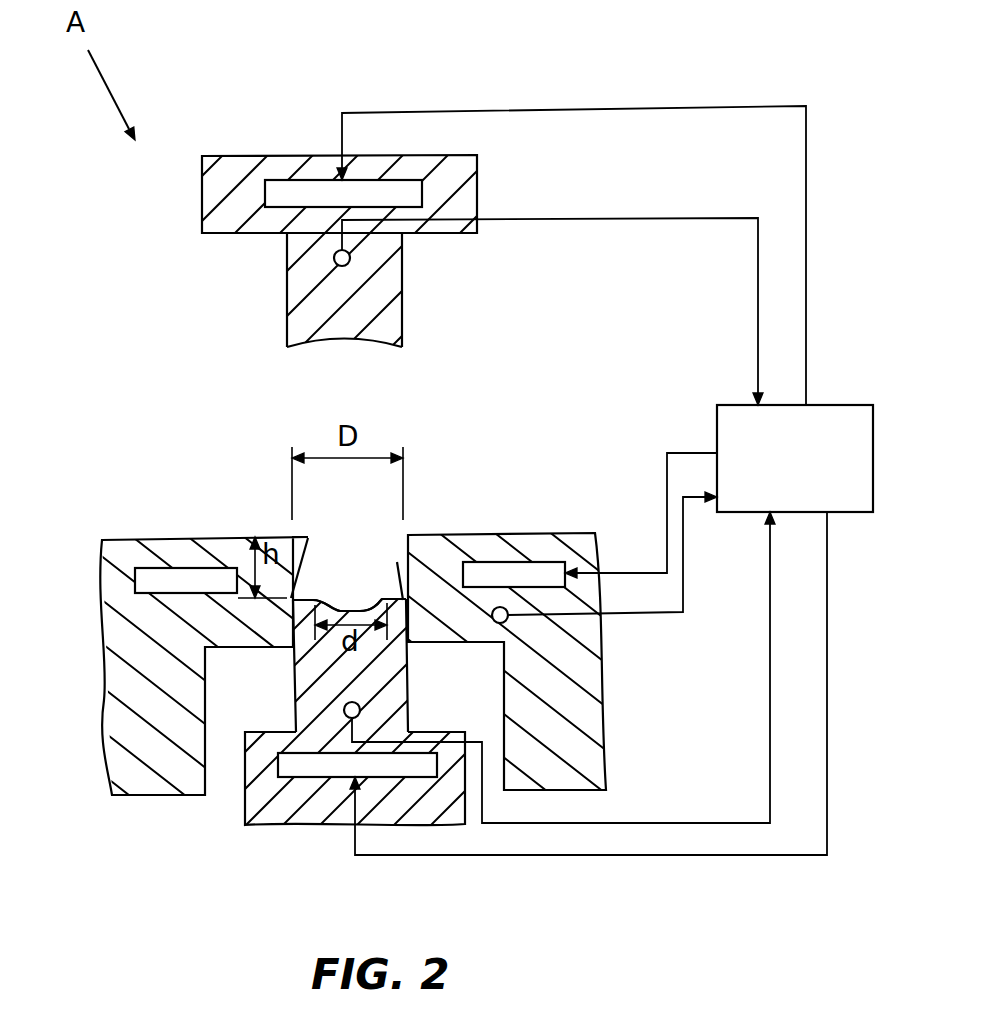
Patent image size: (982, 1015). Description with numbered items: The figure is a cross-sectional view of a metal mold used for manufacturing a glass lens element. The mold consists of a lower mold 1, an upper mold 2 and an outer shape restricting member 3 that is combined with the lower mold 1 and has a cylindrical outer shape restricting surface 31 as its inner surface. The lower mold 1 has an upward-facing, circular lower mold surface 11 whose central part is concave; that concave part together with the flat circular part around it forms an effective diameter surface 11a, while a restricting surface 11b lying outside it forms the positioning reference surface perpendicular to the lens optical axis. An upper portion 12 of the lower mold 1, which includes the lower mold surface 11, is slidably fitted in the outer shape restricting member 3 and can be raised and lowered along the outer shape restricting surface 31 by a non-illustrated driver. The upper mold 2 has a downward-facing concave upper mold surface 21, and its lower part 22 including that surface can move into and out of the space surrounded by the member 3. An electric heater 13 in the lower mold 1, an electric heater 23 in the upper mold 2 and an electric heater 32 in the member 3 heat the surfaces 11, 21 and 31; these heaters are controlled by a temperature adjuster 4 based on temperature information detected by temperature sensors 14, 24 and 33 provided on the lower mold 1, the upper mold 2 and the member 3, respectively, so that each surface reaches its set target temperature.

The lower mold 1 is at (497, 689).
The upper mold 2 is at (455, 252).
The outer shape restricting member 3 is at (364, 624).
The temperature adjuster 4 is at (813, 485).
The lower mold surface 11 is at (387, 540).
The effective diameter surface 11a is at (345, 610).
The restricting surface 11b is at (397, 562).
The upper portion 12 is at (358, 601).
The electric heater 13 is at (297, 772).
The temperature sensor 14 is at (360, 705).
The upper mold surface 21 is at (342, 345).
The lower part 22 is at (312, 314).
The electric heater 23 is at (287, 193).
The temperature sensor 24 is at (350, 264).
The outer shape restricting surface 31 is at (308, 538).
The electric heater 32 is at (525, 573).
The temperature sensor 33 is at (507, 620).